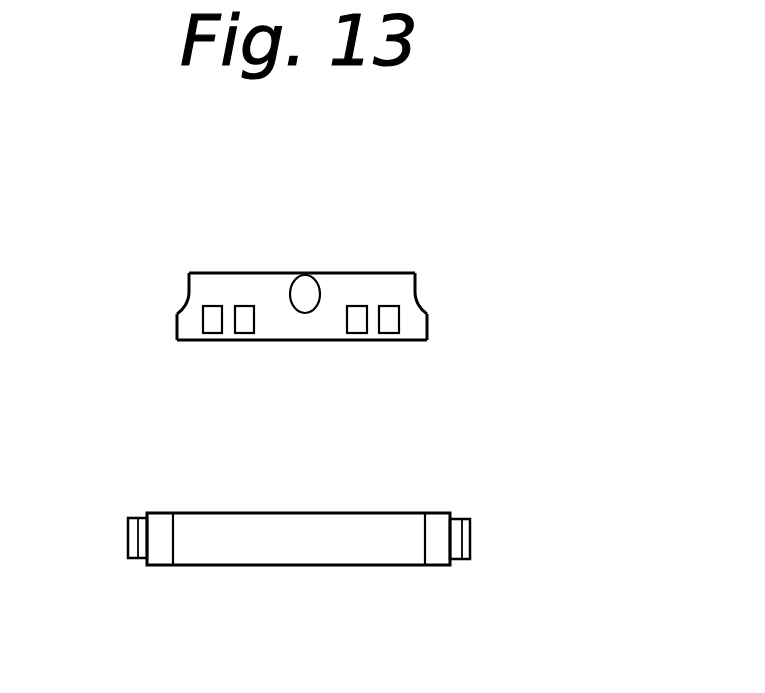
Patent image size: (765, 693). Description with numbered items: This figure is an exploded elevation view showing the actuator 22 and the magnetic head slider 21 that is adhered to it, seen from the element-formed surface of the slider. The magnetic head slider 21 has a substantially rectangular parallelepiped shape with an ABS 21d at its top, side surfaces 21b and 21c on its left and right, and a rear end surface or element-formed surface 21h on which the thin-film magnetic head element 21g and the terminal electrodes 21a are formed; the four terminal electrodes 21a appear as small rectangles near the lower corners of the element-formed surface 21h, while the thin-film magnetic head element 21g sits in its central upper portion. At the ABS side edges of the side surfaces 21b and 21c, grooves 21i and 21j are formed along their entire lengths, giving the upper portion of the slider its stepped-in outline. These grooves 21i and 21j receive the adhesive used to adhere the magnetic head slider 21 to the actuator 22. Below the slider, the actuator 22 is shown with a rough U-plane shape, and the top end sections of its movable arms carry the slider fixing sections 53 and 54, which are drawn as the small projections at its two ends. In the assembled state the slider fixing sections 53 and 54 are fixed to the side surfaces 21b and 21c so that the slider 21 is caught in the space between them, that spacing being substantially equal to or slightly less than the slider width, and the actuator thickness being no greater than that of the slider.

The magnetic head slider 21 is at (292, 307).
The terminal electrodes 21a is at (245, 322).
The side surface 21b is at (177, 330).
The side surface 21c is at (430, 332).
The ABS 21d is at (380, 273).
The thin-film magnetic head element 21g is at (313, 290).
The element-formed surface 21h is at (267, 285).
The groove 21i is at (187, 283).
The groove 21j is at (418, 282).
The actuator 22 is at (341, 533).
The slider fixing section 53 is at (160, 548).
The slider fixing section 54 is at (442, 553).